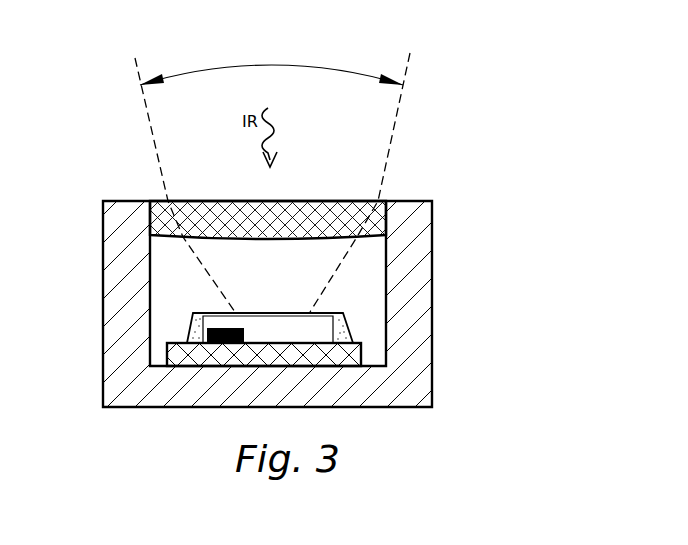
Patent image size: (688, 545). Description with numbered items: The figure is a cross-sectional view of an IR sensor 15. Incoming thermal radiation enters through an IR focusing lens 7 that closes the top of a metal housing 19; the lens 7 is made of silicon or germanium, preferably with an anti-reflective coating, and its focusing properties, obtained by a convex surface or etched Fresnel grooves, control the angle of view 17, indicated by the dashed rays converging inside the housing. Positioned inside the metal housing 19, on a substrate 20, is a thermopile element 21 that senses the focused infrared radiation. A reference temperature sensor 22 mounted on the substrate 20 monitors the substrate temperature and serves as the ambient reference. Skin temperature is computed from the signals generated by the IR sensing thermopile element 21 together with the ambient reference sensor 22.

The IR focusing lens 7 is at (328, 215).
The IR sensor 15 is at (442, 175).
The angle of view 17 is at (304, 65).
The metal housing 19 is at (422, 324).
The substrate 20 is at (200, 366).
The thermopile element 21 is at (280, 312).
The reference temperature sensor 22 is at (237, 328).